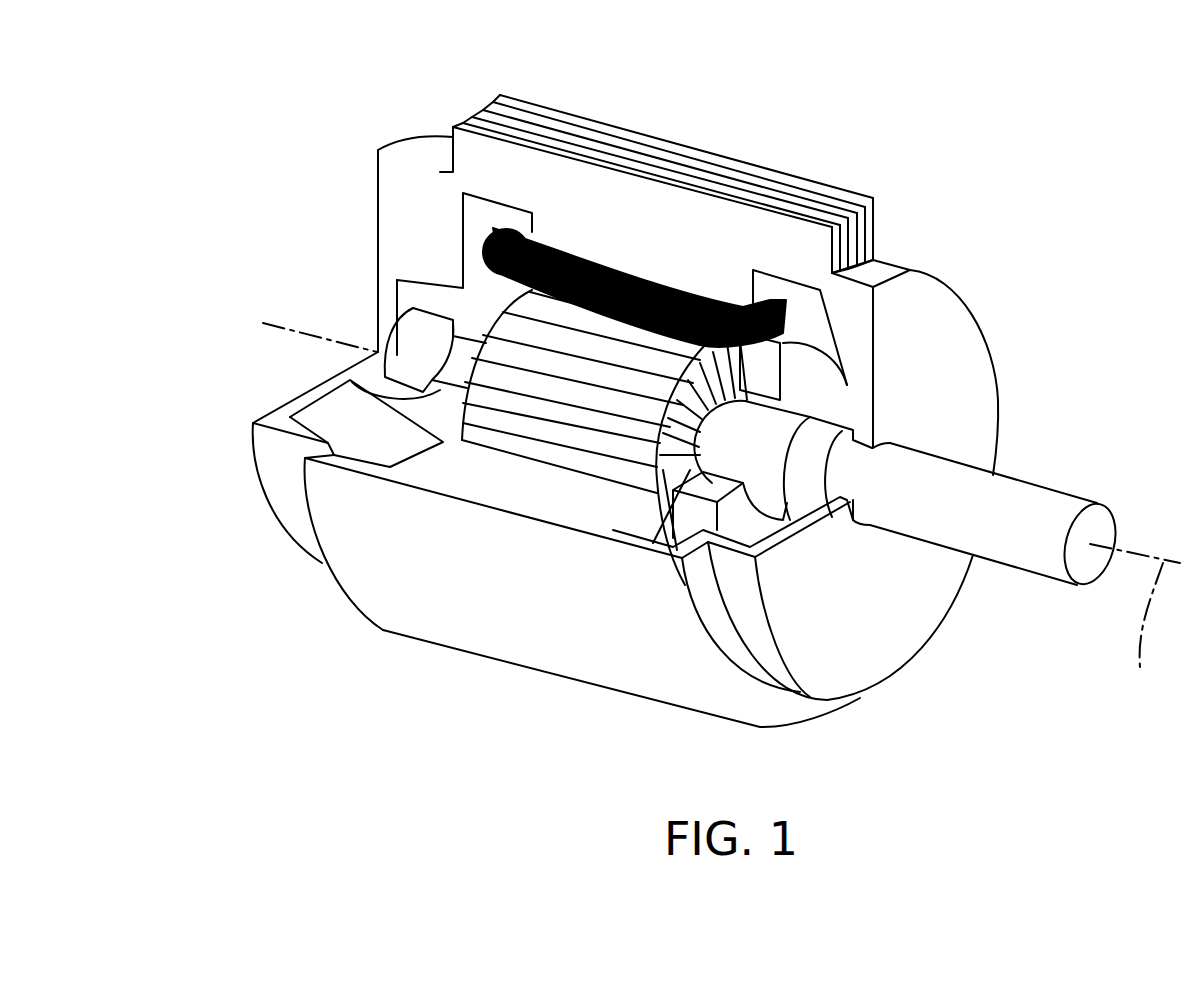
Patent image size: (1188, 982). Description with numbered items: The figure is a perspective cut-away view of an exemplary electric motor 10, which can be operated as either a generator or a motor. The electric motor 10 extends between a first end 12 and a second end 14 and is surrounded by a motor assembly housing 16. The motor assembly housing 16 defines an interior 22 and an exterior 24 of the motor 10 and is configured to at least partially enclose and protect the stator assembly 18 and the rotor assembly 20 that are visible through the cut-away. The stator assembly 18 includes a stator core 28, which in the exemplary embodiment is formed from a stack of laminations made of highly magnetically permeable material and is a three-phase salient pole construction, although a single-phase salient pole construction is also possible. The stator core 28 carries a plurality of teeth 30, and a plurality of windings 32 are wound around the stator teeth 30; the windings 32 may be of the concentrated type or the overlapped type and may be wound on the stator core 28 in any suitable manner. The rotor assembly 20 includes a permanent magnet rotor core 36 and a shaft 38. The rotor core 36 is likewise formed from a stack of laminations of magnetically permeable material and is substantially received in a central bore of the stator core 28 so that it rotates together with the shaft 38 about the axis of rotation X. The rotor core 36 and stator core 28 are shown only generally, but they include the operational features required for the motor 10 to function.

The electric motor 10 is at (973, 172).
The first end 12 is at (292, 141).
The second end 14 is at (1003, 282).
The motor assembly housing 16 is at (845, 188).
The stator assembly 18 is at (568, 268).
The rotor assembly 20 is at (560, 422).
The interior 22 is at (421, 241).
The exterior 24 is at (405, 134).
The stator core 28 is at (673, 300).
The teeth 30 is at (757, 318).
The windings 32 is at (668, 301).
The permanent magnet rotor core 36 is at (668, 468).
The shaft 38 is at (1065, 490).